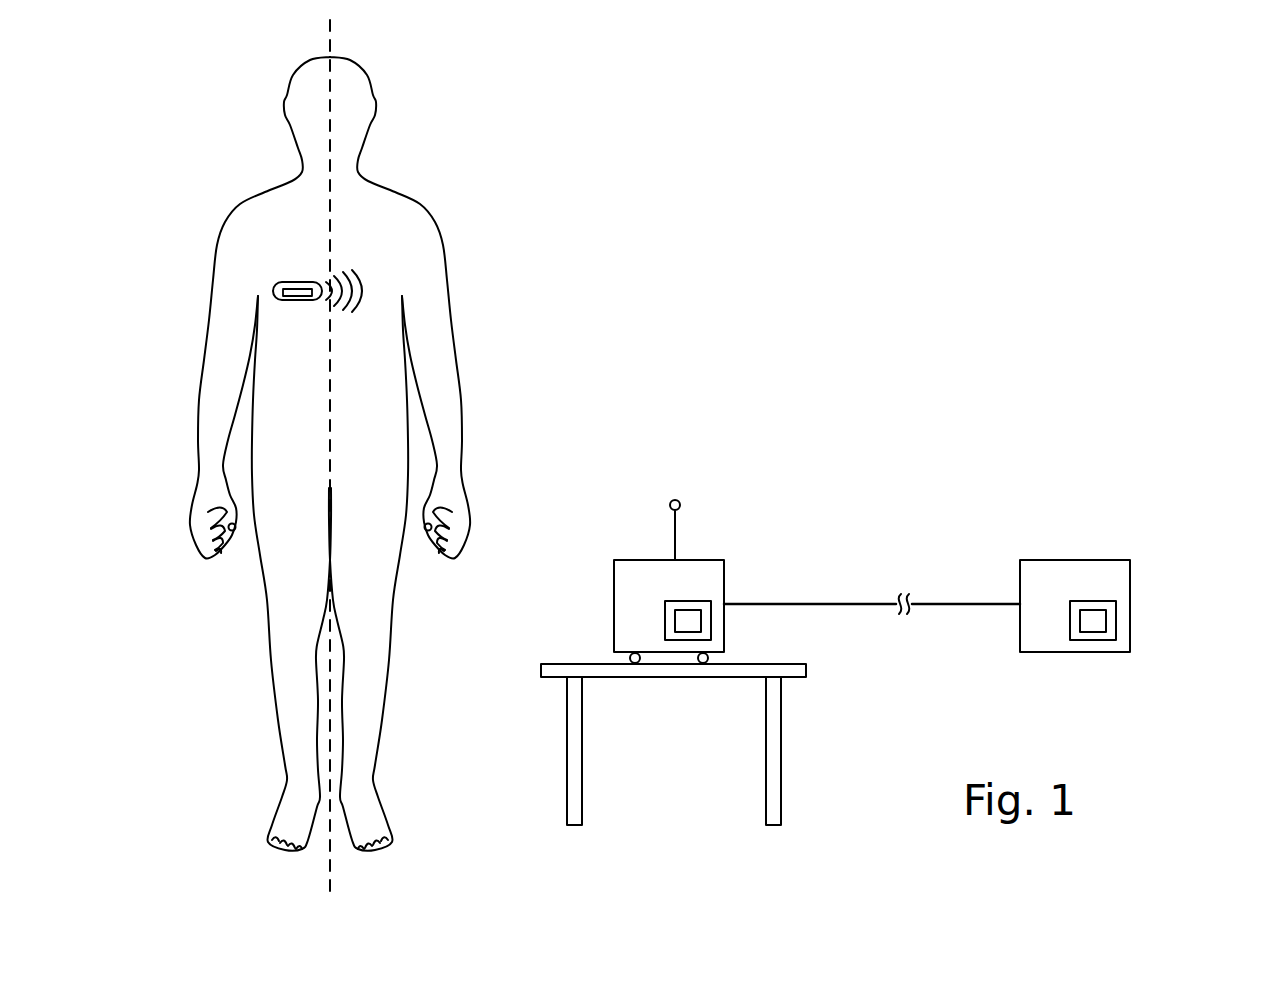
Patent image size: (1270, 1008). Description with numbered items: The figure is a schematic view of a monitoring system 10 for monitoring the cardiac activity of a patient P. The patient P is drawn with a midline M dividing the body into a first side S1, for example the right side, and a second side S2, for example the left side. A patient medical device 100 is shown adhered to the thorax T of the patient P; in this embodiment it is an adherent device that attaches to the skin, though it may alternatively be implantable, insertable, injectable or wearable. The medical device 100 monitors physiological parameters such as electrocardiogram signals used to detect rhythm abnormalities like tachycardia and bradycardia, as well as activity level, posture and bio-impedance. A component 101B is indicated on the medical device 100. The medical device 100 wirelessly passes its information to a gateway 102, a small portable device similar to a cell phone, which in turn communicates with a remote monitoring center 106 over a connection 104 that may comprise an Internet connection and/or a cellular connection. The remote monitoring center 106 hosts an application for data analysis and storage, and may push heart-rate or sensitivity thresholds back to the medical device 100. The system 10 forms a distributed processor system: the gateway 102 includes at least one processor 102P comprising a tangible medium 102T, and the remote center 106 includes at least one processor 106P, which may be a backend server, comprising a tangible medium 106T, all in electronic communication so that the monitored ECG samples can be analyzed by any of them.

The monitoring system 10 is at (795, 136).
The patient P is at (226, 151).
The midline M is at (333, 27).
The first side S1 is at (222, 198).
The second side S2 is at (443, 182).
The thorax T is at (193, 262).
The patient medical device 100 is at (301, 269).
The device component / battery 101B is at (305, 297).
The gateway 102 is at (637, 560).
The processor of gateway 102P is at (712, 608).
The tangible medium 102T is at (702, 626).
The connection 104 is at (818, 603).
The remote monitoring center 106 is at (1118, 560).
The processor at remote center 106P is at (1118, 607).
The tangible medium 106T is at (1108, 628).